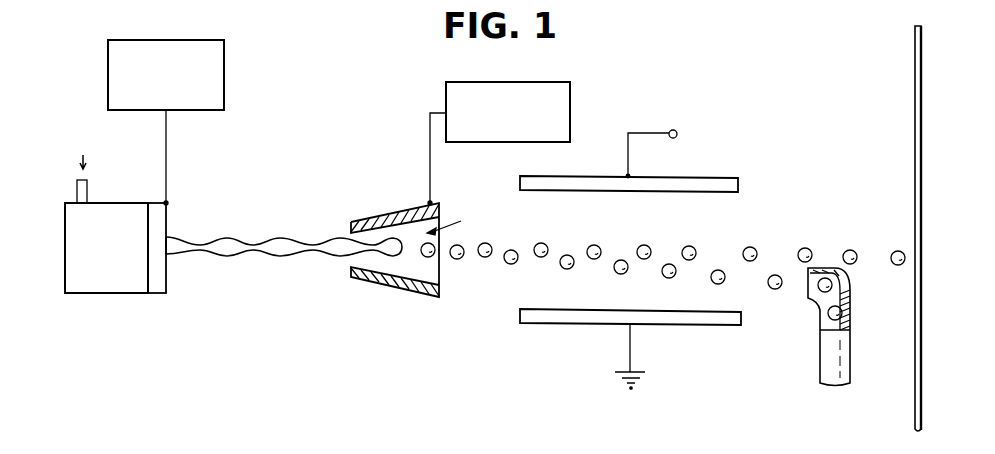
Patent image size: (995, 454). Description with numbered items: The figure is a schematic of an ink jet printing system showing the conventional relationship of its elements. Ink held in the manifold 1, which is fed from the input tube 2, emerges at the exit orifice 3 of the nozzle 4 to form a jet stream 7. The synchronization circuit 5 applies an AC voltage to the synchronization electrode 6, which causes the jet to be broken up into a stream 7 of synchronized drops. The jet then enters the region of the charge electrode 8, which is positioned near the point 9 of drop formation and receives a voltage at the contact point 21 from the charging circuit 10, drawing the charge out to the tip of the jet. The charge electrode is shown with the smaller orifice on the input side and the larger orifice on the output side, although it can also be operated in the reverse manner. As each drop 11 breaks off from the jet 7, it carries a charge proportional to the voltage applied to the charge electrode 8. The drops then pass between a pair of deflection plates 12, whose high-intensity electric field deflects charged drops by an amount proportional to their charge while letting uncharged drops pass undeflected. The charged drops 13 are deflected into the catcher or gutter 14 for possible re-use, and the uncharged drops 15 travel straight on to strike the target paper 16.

The manifold 1 is at (77, 253).
The input tube 2 is at (88, 190).
The exit orifice 3 is at (166, 237).
The nozzle 4 is at (162, 287).
The synchronization circuit 5 is at (108, 76).
The synchronization electrode 6 is at (168, 202).
The jet stream 7 is at (281, 243).
The charge electrode 8 is at (383, 222).
The point of drop formation 9 is at (452, 219).
The charging circuit 10 is at (446, 90).
The drop 11 is at (433, 256).
The deflection plates 12 is at (733, 182).
The charged drops 13 is at (462, 256).
The gutter 14 is at (851, 364).
The uncharged drops 15 is at (537, 245).
The target paper 16 is at (915, 116).
The contact point 21 is at (433, 203).